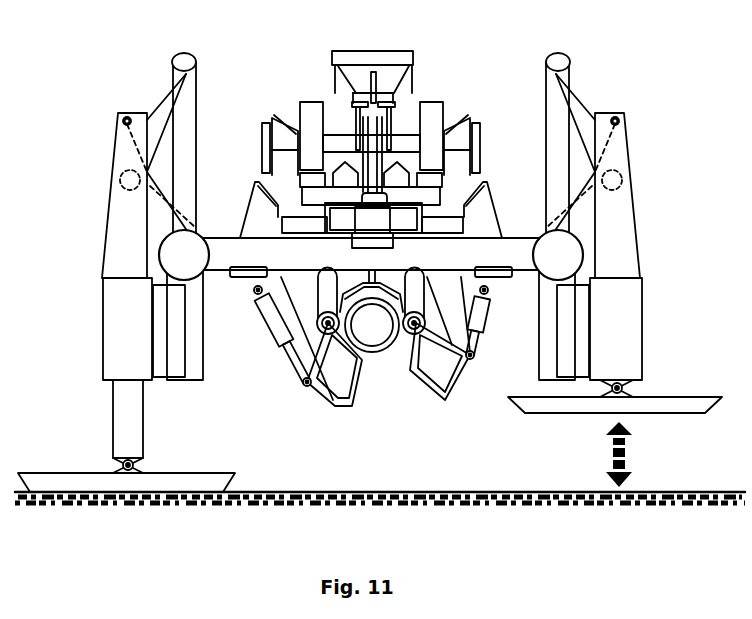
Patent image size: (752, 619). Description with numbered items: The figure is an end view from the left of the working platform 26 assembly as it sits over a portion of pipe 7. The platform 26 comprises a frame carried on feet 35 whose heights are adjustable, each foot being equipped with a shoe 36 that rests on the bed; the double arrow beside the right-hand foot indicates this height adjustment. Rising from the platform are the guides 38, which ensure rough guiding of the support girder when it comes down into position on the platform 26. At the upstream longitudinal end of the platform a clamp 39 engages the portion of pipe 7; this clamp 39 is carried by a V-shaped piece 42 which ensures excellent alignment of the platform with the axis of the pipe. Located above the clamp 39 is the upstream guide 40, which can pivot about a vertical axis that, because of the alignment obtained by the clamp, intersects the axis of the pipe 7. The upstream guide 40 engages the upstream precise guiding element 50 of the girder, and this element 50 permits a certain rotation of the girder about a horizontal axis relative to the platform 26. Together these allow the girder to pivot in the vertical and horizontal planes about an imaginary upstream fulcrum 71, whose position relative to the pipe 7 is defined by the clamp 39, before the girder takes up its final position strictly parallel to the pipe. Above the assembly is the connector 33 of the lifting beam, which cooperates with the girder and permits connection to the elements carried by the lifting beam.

The portion of pipe 7 is at (382, 335).
The working platform 26 is at (535, 238).
The connector 33 is at (343, 61).
The feet 35 is at (116, 398).
The shoes 36 is at (98, 478).
The guides 38 is at (180, 80).
The clamp 39 is at (324, 378).
The upstream guide 40 is at (272, 140).
The V-shaped piece 42 is at (277, 340).
The upstream precise guiding element 50 is at (431, 105).
The imaginary upstream fulcrum 71 is at (378, 158).